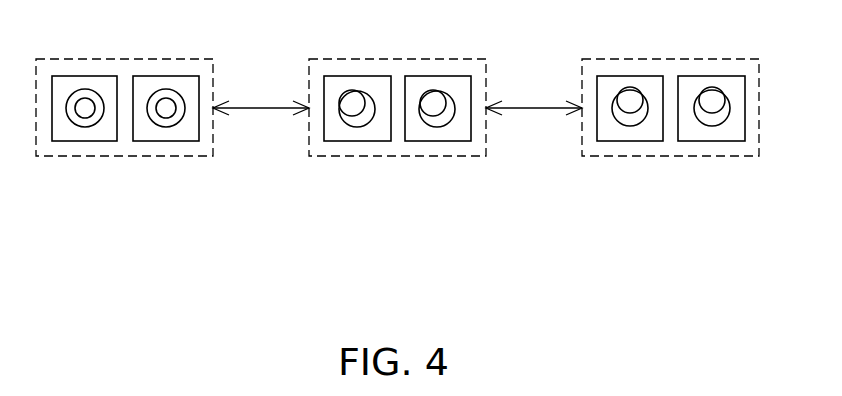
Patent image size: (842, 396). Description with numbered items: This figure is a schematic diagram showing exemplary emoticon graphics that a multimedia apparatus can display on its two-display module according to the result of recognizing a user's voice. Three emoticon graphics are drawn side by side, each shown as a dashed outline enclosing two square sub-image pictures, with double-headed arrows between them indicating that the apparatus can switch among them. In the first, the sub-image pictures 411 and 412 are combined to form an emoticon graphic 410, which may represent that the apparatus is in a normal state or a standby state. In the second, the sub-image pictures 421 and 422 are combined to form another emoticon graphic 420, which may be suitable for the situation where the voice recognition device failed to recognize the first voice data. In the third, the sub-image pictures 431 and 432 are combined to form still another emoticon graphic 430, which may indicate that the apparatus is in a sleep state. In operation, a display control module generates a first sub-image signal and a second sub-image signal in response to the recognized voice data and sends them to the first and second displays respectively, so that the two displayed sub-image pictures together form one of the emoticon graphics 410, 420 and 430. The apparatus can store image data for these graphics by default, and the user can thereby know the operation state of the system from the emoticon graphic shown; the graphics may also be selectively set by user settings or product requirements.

The emoticon graphic 410 is at (125, 58).
The sub-image picture 411 is at (82, 142).
The sub-image picture 412 is at (162, 142).
The emoticon graphic 420 is at (397, 58).
The sub-image picture 421 is at (355, 142).
The sub-image picture 422 is at (436, 142).
The emoticon graphic 430 is at (670, 58).
The sub-image picture 431 is at (629, 142).
The sub-image picture 432 is at (710, 142).